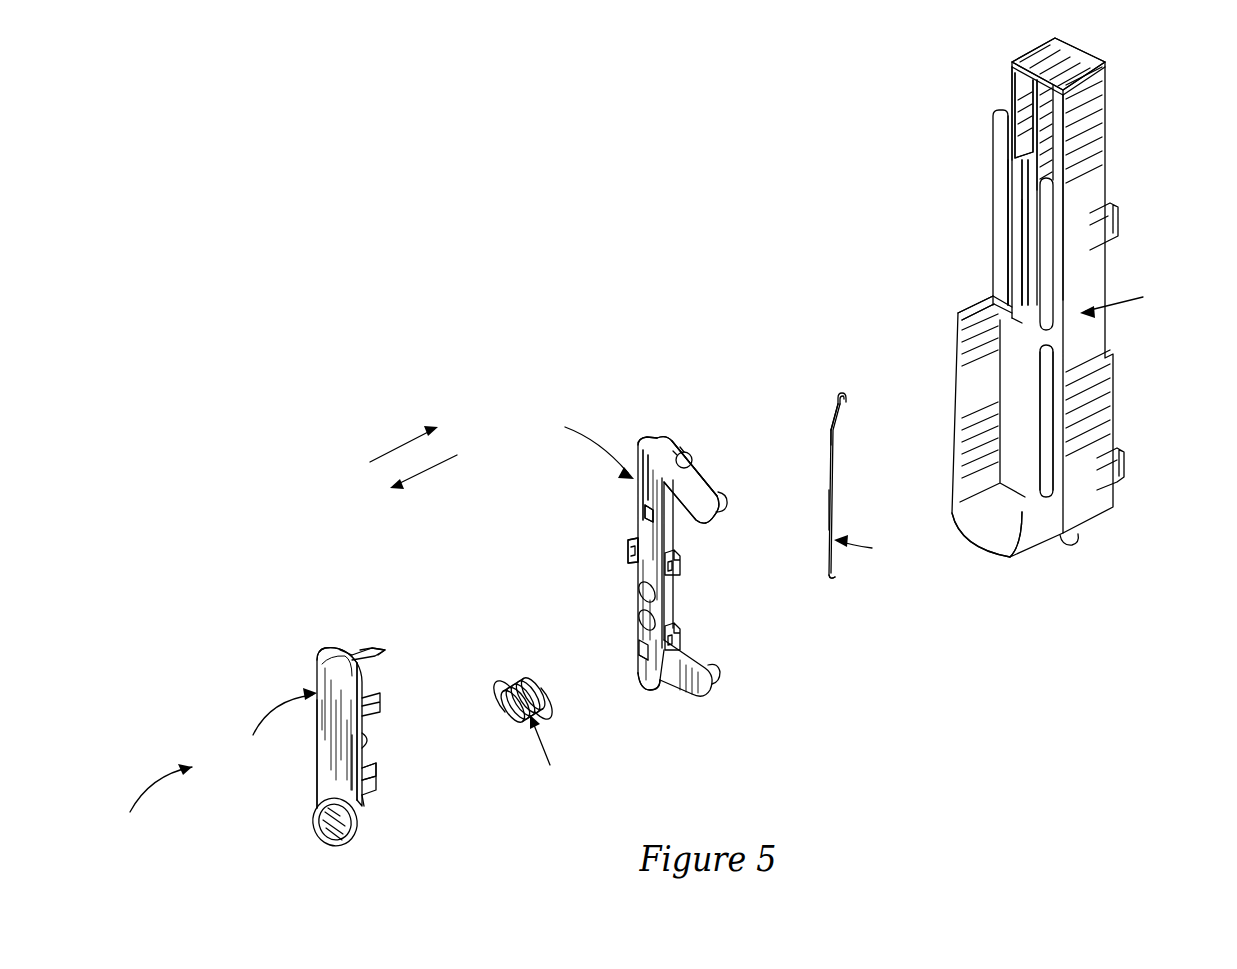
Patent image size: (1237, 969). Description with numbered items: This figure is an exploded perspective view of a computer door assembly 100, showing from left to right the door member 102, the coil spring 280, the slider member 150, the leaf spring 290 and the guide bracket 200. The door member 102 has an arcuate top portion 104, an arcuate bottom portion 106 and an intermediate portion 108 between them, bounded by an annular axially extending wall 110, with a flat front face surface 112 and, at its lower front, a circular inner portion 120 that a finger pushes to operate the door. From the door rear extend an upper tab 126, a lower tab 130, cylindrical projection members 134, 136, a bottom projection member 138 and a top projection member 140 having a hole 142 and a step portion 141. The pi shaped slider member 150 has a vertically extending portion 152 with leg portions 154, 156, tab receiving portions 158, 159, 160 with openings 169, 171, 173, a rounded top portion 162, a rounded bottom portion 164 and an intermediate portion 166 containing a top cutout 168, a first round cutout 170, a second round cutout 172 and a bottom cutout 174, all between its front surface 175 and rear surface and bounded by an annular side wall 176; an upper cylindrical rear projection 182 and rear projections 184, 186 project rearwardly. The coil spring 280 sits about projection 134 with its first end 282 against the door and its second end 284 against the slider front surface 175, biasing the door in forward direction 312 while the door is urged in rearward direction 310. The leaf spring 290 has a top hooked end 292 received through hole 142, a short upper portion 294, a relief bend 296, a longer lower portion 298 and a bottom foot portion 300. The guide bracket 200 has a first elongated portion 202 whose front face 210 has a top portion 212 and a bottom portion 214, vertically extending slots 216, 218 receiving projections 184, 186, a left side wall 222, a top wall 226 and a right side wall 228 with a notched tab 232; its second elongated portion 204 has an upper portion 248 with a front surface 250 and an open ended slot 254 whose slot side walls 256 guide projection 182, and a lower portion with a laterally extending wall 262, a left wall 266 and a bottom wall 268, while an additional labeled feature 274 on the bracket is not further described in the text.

The door assembly 100 is at (148, 805).
The door member 102 is at (294, 728).
The arcuate top portion 104 is at (338, 673).
The arcuate bottom portion 106 is at (331, 845).
The intermediate portion 108 is at (353, 757).
The annular axially extending wall 110 is at (348, 647).
The front face surface 112 is at (320, 753).
The circular inner portion 120 is at (320, 840).
The upper tab 126 is at (382, 704).
The lower tab 130 is at (372, 792).
The cylindrical projection member 134 is at (370, 742).
The cylindrical projection member 136 is at (374, 770).
The bottom projection member 138 is at (364, 803).
The top projection member 140 is at (368, 643).
The step portion 141 is at (338, 648).
The hole 142 is at (372, 652).
The slider member 150 is at (632, 544).
The vertically extending portion 152 is at (638, 640).
The leg portion 154 is at (688, 498).
The leg portion 156 is at (695, 692).
The tab receiving portion 158 is at (682, 570).
The tab receiving portion 159 is at (647, 522).
The tab receiving portion 160 is at (685, 640).
The rounded top portion 162 is at (658, 440).
The rounded bottom portion 164 is at (641, 688).
The intermediate portion 166 is at (632, 555).
The top cutout 168 is at (645, 508).
The opening 169 is at (682, 563).
The first round cutout 170 is at (641, 592).
The opening 171 is at (633, 548).
The second round cutout 172 is at (641, 622).
The opening 173 is at (680, 630).
The bottom cutout 174 is at (639, 658).
The front surface 175 is at (647, 480).
The annular side wall 176 is at (664, 440).
The upper cylindrical rear projection 182 is at (690, 458).
The slider projection 184 is at (724, 498).
The rear projection 186 is at (720, 674).
The guide bracket 200 is at (1064, 297).
The first elongated portion 202 is at (1080, 70).
The second elongated portion 204 is at (1002, 190).
The front face 210 is at (1048, 160).
The top portion 212 is at (1053, 108).
The bottom portion 214 is at (1079, 538).
The vertically extending slot 216 is at (1052, 203).
The vertically extending slot 218 is at (1043, 388).
The left side wall 222 is at (1011, 75).
The top wall 226 is at (1053, 70).
The right side wall 228 is at (1093, 173).
The notched tab 232 is at (1126, 460).
The upper portion 248 is at (1002, 168).
The front surface 250 is at (1002, 128).
The open ended slot 254 is at (1018, 265).
The slot side wall 256 is at (1010, 227).
The laterally extending wall 262 is at (958, 313).
The left wall 266 is at (998, 520).
The bottom wall 268 is at (997, 521).
The guide rail 274 is at (1058, 342).
The coil spring 280 is at (530, 732).
The first end 282 is at (506, 716).
The second end 284 is at (541, 678).
The leaf spring 290 is at (872, 491).
The top hooked end 292 is at (839, 396).
The short upper portion 294 is at (838, 420).
The relief bend 296 is at (833, 440).
The lower portion 298 is at (832, 512).
The bottom foot portion 300 is at (832, 578).
The rearward direction 310 is at (400, 445).
The forward direction 312 is at (417, 472).